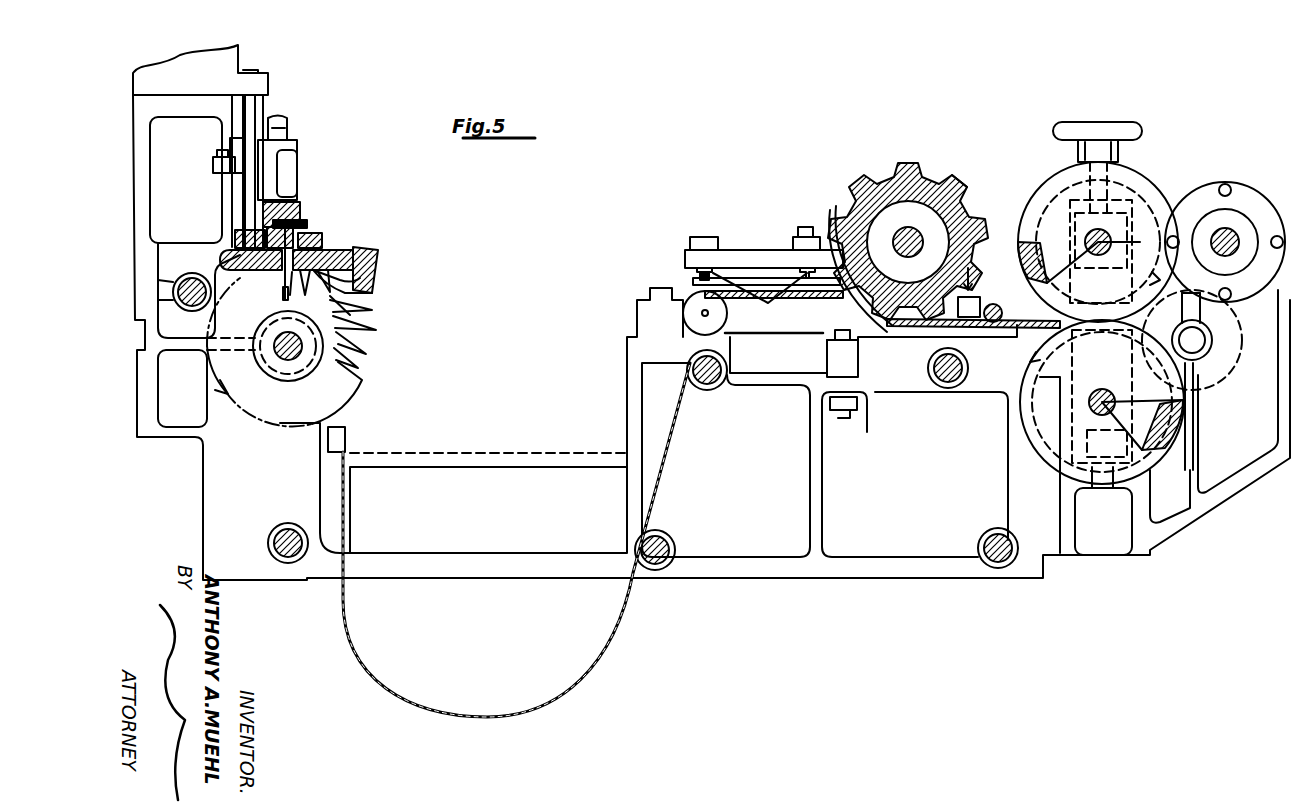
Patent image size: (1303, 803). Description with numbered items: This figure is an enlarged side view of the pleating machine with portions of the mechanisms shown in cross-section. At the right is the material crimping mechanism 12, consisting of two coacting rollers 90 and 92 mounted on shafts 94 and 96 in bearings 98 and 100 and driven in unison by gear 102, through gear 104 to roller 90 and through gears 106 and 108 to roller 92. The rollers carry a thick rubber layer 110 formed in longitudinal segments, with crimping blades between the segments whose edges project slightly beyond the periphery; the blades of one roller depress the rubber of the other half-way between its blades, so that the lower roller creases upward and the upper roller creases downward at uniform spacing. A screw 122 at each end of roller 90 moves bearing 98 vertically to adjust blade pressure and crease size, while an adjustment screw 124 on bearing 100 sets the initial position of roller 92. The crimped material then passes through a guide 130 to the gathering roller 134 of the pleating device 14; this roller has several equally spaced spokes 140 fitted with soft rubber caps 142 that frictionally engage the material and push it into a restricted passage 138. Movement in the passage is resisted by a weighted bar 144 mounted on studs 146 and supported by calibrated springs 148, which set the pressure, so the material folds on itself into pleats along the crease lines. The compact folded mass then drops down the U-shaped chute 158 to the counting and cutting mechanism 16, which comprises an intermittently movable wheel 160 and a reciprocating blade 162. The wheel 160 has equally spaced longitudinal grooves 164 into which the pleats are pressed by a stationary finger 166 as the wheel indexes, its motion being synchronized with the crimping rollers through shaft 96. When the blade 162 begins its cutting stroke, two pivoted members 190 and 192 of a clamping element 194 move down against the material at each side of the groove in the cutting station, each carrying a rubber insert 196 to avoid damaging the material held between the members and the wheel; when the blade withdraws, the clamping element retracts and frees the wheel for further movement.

The material crimping mechanism 12 is at (1127, 293).
The pleating device 14 is at (739, 237).
The counting and cutting mechanism 16 is at (310, 210).
The upper crimping roller 90 is at (1140, 187).
The lower crimping roller 92 is at (1032, 427).
The shaft 94 is at (1099, 256).
The shaft 96 is at (1088, 397).
The bearing 98 is at (1142, 205).
The bearing 100 is at (1103, 375).
The gear 102 is at (1247, 187).
The gear 104 is at (1052, 215).
The gear 106 is at (1213, 370).
The gear 108 is at (1028, 407).
The rubber layer 110 is at (1023, 242).
The adjustment screw 122 is at (1085, 123).
The adjustment screw 124 is at (1143, 460).
The guide 130 is at (1030, 318).
The gathering roller 134 is at (907, 221).
The restricted passage 138 is at (760, 275).
The spokes 140 is at (900, 131).
The rubber caps 142 is at (953, 180).
The weighted bar 144 is at (723, 257).
The studs 146 is at (702, 273).
The calibrated springs 148 is at (763, 304).
The U-shaped chute 158 is at (583, 673).
The intermittently movable wheel 160 is at (340, 393).
The reciprocating blade 162 is at (273, 338).
The longitudinal grooves 164 is at (366, 352).
The stationary finger 166 is at (327, 297).
The pivoted member 190 is at (363, 246).
The pivoted member 192 is at (232, 250).
The clamping element 194 is at (323, 248).
The rubber insert 196 is at (280, 275).